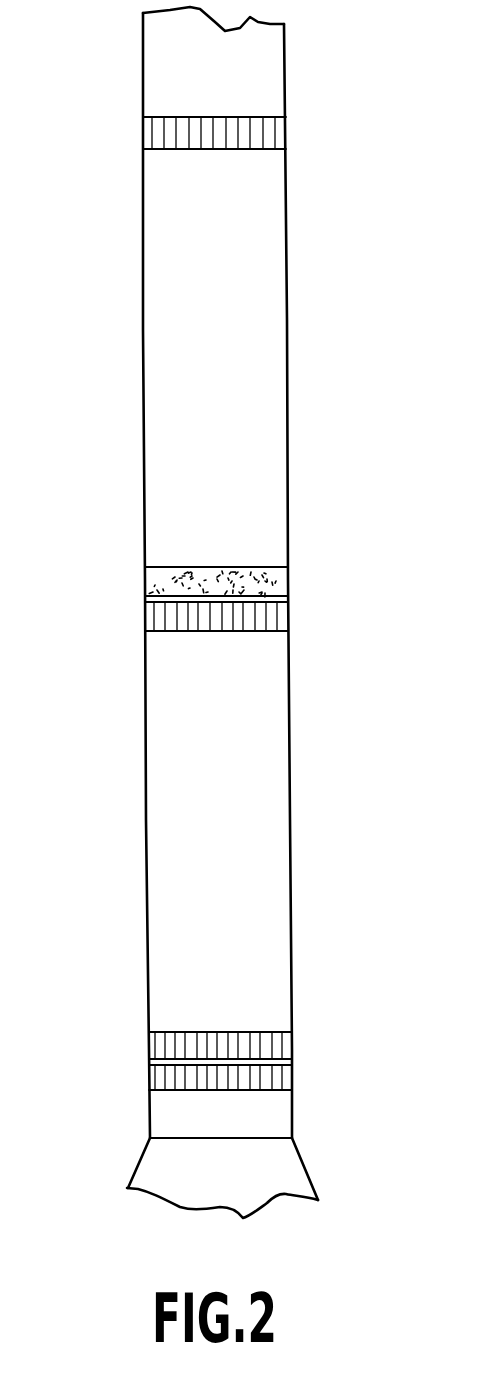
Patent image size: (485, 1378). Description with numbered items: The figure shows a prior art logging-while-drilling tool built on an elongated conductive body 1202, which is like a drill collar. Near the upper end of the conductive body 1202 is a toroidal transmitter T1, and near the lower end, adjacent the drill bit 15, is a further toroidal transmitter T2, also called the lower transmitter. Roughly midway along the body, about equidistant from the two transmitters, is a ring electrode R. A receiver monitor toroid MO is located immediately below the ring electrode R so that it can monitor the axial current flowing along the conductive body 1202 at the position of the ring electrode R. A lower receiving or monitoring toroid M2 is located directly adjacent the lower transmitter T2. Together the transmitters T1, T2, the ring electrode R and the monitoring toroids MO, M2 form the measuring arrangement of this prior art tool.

The conductive body 1202 is at (162, 62).
The toroidal transmitter T1 is at (273, 130).
The ring electrode R is at (278, 583).
The receiver monitor toroid MO is at (282, 616).
The lower toroidal transmitter T2 is at (285, 1047).
The lower monitoring toroid M2 is at (290, 1072).
The drill bit 15 is at (173, 1182).